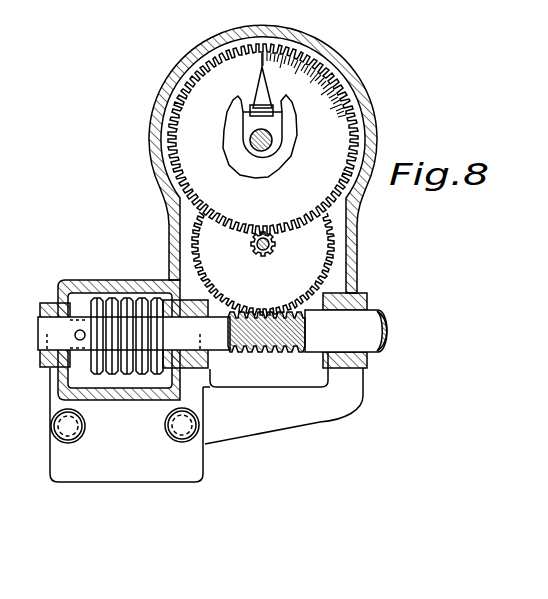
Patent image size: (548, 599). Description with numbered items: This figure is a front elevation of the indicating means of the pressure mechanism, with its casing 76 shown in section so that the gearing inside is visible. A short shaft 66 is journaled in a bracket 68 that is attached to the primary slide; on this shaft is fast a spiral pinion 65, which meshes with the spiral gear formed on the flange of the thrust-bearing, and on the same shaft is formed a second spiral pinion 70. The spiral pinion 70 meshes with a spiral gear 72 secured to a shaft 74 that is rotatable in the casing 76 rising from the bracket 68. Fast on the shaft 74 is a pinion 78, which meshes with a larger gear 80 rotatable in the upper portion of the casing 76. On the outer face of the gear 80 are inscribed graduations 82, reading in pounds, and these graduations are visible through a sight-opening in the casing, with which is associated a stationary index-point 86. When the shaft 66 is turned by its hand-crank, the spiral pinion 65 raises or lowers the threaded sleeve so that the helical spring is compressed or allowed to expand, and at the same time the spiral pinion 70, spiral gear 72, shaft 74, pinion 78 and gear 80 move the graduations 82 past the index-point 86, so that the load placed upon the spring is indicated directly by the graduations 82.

The spiral pinion 65 is at (123, 285).
The short shaft 66 is at (386, 332).
The bracket 68 is at (368, 368).
The spiral pinion 70 is at (281, 355).
The spiral gear 72 is at (334, 243).
The shaft 74 is at (255, 252).
The casing 76 is at (158, 185).
The pinion 78 is at (273, 251).
The gear 80 is at (358, 121).
The graduations 82 is at (351, 118).
The index-point 86 is at (257, 82).